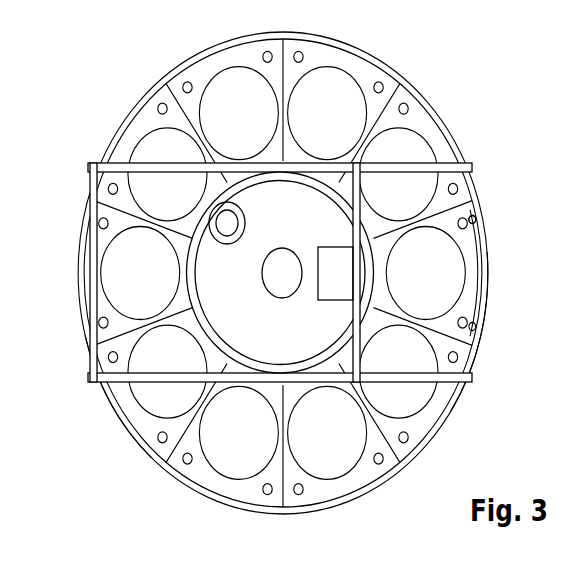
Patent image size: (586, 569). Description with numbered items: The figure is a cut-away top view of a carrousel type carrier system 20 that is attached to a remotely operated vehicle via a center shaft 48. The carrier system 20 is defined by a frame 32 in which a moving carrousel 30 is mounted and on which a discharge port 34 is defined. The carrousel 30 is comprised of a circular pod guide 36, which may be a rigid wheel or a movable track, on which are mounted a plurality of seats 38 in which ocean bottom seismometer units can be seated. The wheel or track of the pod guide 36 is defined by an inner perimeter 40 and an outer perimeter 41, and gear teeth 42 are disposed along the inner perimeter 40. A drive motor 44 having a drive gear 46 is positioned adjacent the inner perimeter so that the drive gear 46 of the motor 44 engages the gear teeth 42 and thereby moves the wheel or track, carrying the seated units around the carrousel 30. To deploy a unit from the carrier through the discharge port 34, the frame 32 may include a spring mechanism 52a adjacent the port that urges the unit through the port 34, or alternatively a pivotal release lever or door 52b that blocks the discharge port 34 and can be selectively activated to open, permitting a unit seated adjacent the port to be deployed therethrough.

The carrier system 20 is at (441, 72).
The carrousel 30 is at (141, 460).
The frame 32 is at (90, 173).
The discharge port 34 is at (492, 318).
The pod guide 36 is at (123, 393).
The seats 38 is at (232, 88).
The inner perimeter 40 is at (360, 278).
The outer perimeter 41 is at (474, 200).
The gear teeth 42 is at (345, 200).
The drive motor 44 is at (212, 240).
The drive gear 46 is at (240, 205).
The center shaft 48 is at (287, 298).
The spring mechanism 52a is at (343, 247).
The pivotal release lever or door 52b is at (487, 292).